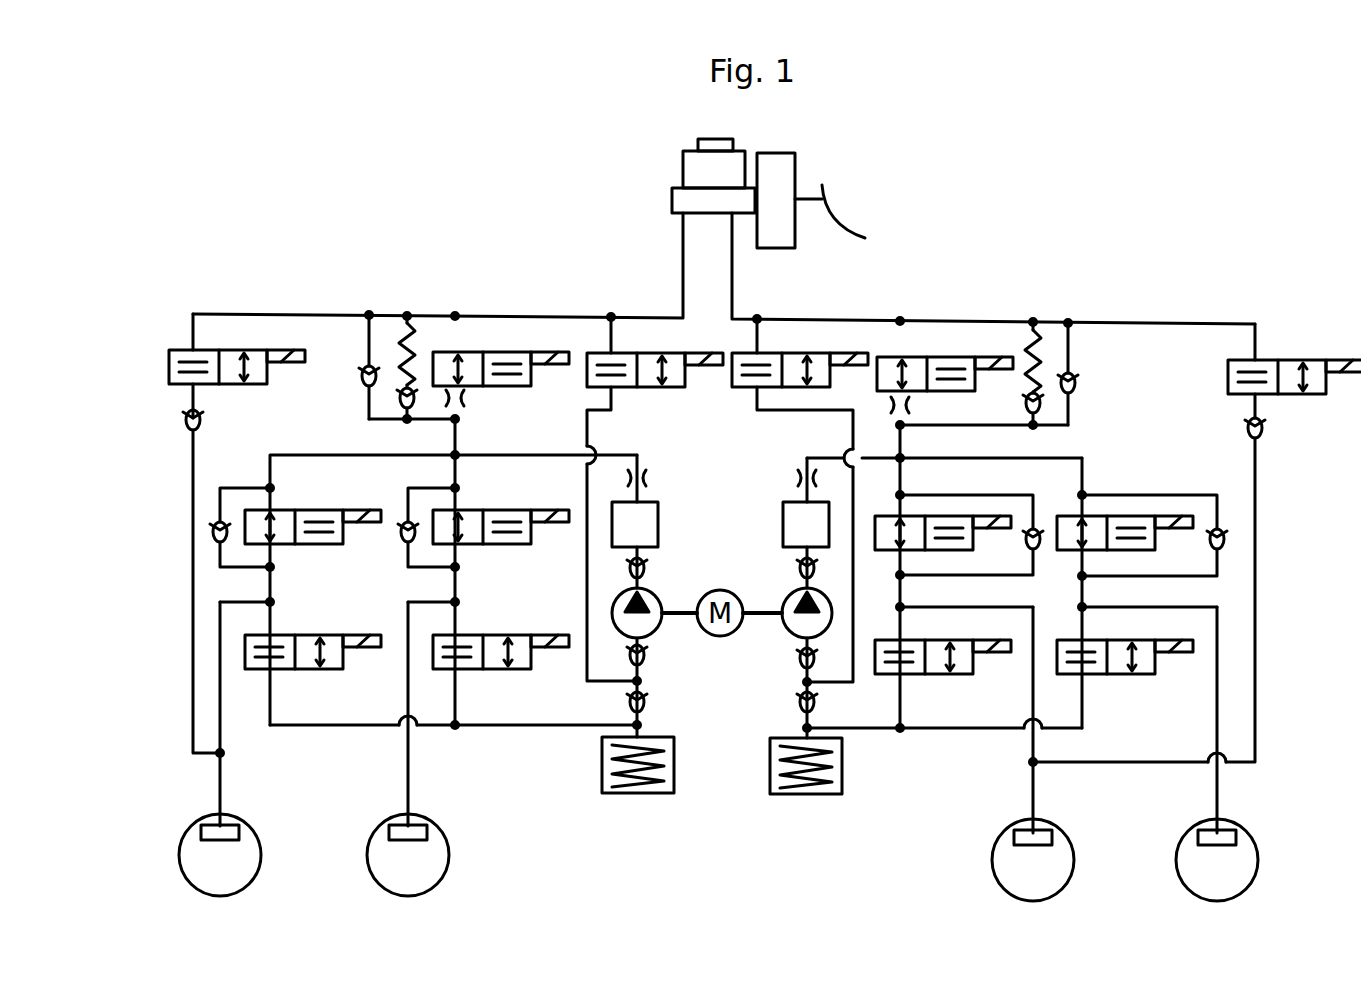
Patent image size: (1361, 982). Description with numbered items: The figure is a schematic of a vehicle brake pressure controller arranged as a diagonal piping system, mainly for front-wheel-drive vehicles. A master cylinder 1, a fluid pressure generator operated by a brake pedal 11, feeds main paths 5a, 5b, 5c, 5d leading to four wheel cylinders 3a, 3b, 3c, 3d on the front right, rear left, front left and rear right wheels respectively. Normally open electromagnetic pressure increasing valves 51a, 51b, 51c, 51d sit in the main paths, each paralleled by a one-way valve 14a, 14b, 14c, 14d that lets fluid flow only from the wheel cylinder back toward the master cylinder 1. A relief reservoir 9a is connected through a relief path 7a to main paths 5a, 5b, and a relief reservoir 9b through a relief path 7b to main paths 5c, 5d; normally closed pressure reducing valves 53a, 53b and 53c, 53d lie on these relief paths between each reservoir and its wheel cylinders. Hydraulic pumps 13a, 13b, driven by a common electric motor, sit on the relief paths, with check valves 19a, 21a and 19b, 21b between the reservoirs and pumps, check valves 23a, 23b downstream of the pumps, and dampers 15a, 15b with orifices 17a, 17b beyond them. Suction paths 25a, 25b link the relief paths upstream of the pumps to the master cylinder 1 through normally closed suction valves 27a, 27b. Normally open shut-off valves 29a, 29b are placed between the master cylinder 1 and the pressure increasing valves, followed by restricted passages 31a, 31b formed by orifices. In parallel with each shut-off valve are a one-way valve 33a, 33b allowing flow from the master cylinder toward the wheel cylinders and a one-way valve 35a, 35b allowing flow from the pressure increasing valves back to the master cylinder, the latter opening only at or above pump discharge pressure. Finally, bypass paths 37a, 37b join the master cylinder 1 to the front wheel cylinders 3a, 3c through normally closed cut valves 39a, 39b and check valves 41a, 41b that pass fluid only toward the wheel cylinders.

The master cylinder 1 is at (683, 170).
The brake pedal 11 is at (832, 210).
The wheel cylinder 3a is at (240, 830).
The wheel cylinder 3b is at (428, 833).
The wheel cylinder 3c is at (1053, 838).
The wheel cylinder 3d is at (1237, 838).
The main path 5a is at (283, 455).
The main path 5b is at (455, 465).
The main path 5c is at (903, 480).
The main path 5d is at (1100, 493).
The relief path 7a is at (487, 738).
The relief path 7b is at (855, 735).
The relief reservoir 9a is at (618, 793).
The relief reservoir 9b is at (780, 793).
The hydraulic pump 13a is at (615, 630).
The hydraulic pump 13b is at (790, 630).
The one-way valve 14a is at (216, 524).
The one-way valve 14b is at (405, 545).
The one-way valve 14c is at (1030, 555).
The one-way valve 14d is at (1222, 545).
The damper 15a is at (658, 518).
The damper 15b is at (783, 540).
The orifice 17a is at (661, 484).
The orifice 17b is at (790, 468).
The check valve 19a is at (630, 705).
The check valve 19b is at (800, 705).
The check valve 21a is at (630, 662).
The check valve 21b is at (800, 660).
The check valve 23a is at (630, 568).
The check valve 23b is at (815, 575).
The suction path 25a is at (587, 415).
The suction path 25b is at (755, 400).
The suction valve 27a is at (655, 335).
The suction valve 27b is at (806, 340).
The shut-off valve 29a is at (489, 334).
The shut-off valve 29b is at (952, 348).
The restricted passage 31a is at (479, 404).
The restricted passage 31b is at (900, 390).
The one-way valve 33a is at (360, 358).
The one-way valve 33b is at (1089, 377).
The one-way valve 35a is at (386, 406).
The one-way valve 35b is at (1052, 390).
The bypass path 37a is at (192, 520).
The bypass path 37b is at (1257, 500).
The cut valve 39a is at (181, 332).
The cut valve 39b is at (1287, 341).
The check valve 41a is at (186, 412).
The check valve 41b is at (1276, 438).
The pressure increasing valve 51a is at (309, 556).
The pressure increasing valve 51b is at (499, 503).
The pressure increasing valve 51c is at (946, 494).
The pressure increasing valve 51d is at (1130, 569).
The pressure reducing valve 53a is at (311, 674).
The pressure reducing valve 53b is at (508, 632).
The pressure reducing valve 53c is at (946, 680).
The pressure reducing valve 53d is at (1141, 681).